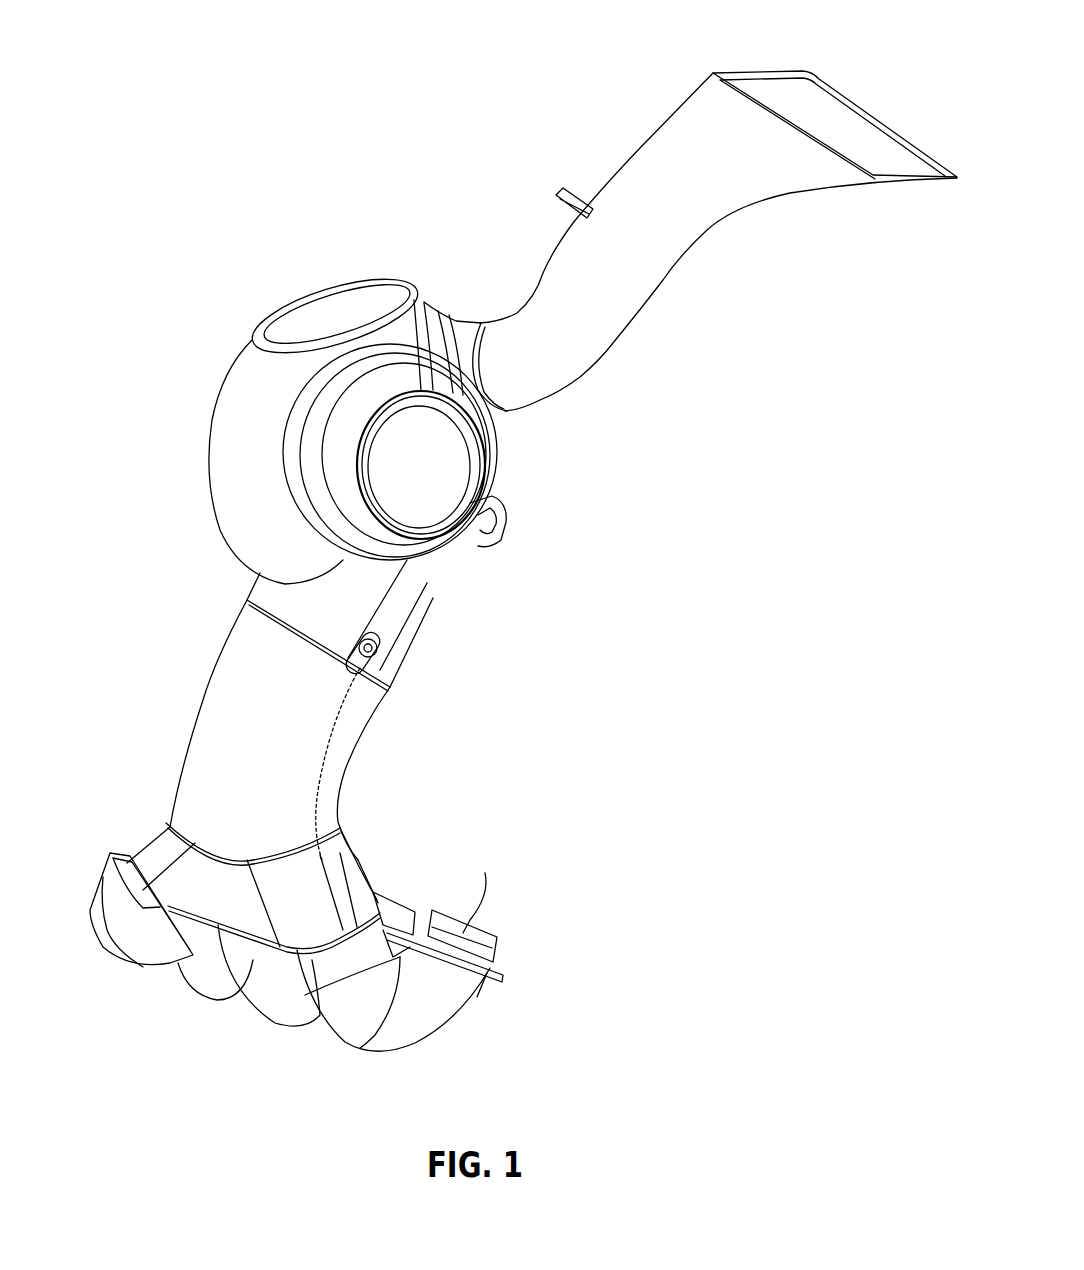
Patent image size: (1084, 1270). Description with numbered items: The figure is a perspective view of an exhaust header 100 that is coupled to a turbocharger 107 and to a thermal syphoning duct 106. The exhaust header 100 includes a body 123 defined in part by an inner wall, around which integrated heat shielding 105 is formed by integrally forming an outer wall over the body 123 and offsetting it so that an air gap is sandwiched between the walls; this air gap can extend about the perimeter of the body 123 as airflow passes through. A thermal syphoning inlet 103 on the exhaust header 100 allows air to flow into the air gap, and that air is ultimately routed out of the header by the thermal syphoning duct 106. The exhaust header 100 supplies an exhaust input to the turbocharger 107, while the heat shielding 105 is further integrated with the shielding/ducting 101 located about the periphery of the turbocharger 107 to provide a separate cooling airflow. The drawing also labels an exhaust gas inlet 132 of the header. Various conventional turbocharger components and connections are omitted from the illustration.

The exhaust header 100 is at (481, 1045).
The shielding/ducting 101 is at (240, 395).
The thermal syphoning inlet 103 is at (97, 878).
The integrated heat shielding 105 is at (347, 733).
The thermal syphoning duct 106 is at (683, 127).
The turbocharger 107 is at (460, 465).
The body 123 is at (238, 664).
The exhaust gas inlet 132 is at (397, 893).